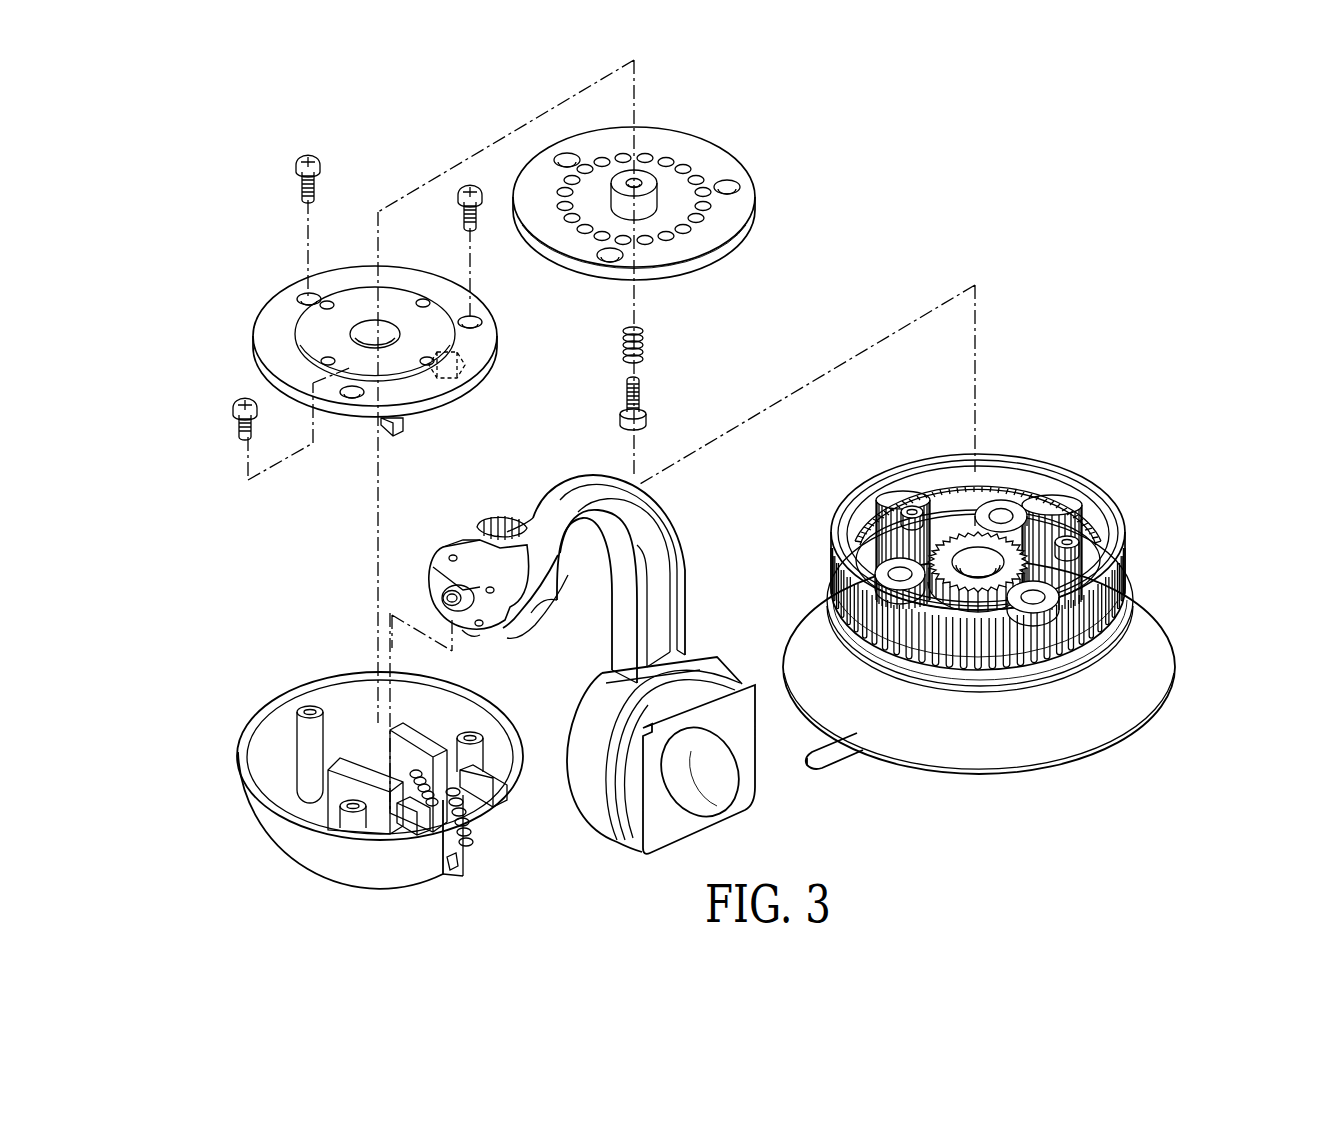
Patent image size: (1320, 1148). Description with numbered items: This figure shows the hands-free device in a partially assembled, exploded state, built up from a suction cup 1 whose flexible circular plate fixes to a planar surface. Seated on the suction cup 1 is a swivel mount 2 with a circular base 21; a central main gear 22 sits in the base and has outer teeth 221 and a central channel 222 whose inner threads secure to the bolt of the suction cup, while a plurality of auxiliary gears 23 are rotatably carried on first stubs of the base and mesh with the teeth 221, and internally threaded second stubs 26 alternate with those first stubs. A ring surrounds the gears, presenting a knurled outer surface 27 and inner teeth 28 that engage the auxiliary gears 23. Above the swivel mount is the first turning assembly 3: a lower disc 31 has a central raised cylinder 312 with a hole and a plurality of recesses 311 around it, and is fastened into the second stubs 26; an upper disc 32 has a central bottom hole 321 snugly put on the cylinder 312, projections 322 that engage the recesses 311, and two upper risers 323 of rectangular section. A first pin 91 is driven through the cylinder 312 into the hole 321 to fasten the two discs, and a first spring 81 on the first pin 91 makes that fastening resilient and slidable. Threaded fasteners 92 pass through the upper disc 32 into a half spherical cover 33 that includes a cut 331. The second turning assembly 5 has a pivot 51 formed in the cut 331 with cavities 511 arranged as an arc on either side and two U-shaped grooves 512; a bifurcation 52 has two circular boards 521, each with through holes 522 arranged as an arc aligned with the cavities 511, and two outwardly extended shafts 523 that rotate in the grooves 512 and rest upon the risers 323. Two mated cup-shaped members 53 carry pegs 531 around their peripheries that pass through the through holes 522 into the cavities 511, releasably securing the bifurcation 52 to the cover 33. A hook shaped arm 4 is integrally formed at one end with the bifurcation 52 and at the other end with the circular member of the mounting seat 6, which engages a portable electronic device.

The suction cup 1 is at (1063, 768).
The swivel mount 2 is at (1130, 548).
The circular base 21 is at (1145, 678).
The central main gear 22 is at (1012, 556).
The auxiliary gears 23 is at (990, 515).
The second stubs 26 is at (875, 538).
The knurled outer surface 27 is at (1108, 520).
The inner teeth 28 is at (1030, 548).
The outer teeth 221 is at (930, 595).
The central channel 222 is at (922, 508).
The first turning assembly 3 is at (372, 167).
The lower disc 31 is at (738, 227).
The recesses 311 is at (705, 208).
The central raised cylinder 312 is at (648, 180).
The upper disc 32 is at (275, 313).
The central bottom hole 321 is at (368, 327).
The projections 322 is at (426, 300).
The upper risers 323 is at (400, 430).
The half spherical cover 33 is at (277, 830).
The cut 331 is at (468, 862).
The hook shaped arm 4 is at (660, 540).
The second turning assembly 5 is at (405, 648).
The pivot 51 is at (460, 862).
The cavities 511 is at (455, 800).
The U-shaped grooves 512 is at (470, 795).
The bifurcation 52 is at (412, 556).
The circular boards 521 is at (438, 582).
The through holes 522 is at (483, 625).
The shafts 523 is at (438, 568).
The cup-shaped members 53 is at (496, 527).
The pegs 531 is at (468, 640).
The mounting seat 6 is at (703, 645).
The first spring 81 is at (645, 334).
The first pin 91 is at (642, 388).
The threaded fasteners 92 is at (238, 415).